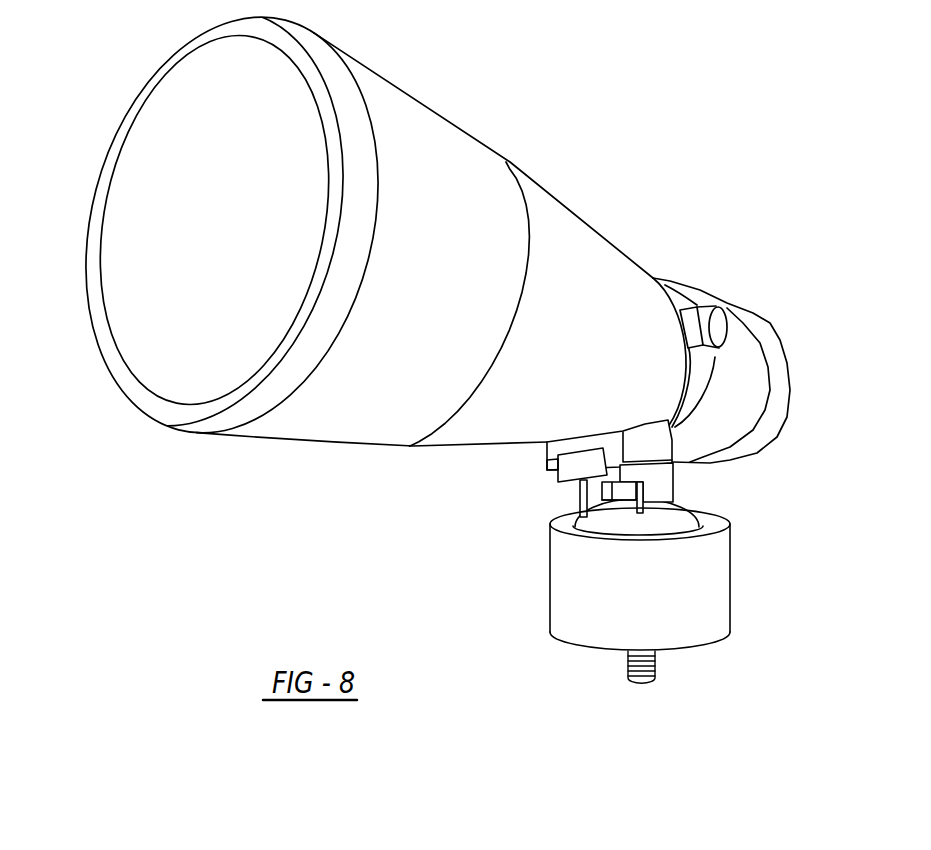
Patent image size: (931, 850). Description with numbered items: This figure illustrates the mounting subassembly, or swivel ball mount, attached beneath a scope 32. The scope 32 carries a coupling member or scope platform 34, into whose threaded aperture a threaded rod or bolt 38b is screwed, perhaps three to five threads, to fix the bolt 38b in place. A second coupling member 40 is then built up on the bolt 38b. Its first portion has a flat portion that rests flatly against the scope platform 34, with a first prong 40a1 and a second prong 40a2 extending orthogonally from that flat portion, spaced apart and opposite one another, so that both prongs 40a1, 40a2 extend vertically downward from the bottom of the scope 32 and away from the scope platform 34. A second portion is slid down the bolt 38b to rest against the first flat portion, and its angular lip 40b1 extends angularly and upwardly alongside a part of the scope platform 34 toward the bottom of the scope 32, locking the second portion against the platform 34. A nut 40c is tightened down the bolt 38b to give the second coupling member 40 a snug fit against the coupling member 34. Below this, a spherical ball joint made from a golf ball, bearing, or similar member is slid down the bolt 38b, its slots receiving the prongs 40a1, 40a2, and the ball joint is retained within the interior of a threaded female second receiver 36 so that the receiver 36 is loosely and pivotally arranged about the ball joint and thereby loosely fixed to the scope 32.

The scope 32 is at (463, 127).
The coupling member 34 is at (657, 440).
The second receiver 36 is at (573, 625).
The bolt 38b is at (658, 662).
The second coupling member 40 is at (665, 482).
The first prong 40a1 is at (588, 487).
The second prong 40a2 is at (657, 482).
The angular lip 40b1 is at (557, 467).
The nut 40c is at (604, 490).